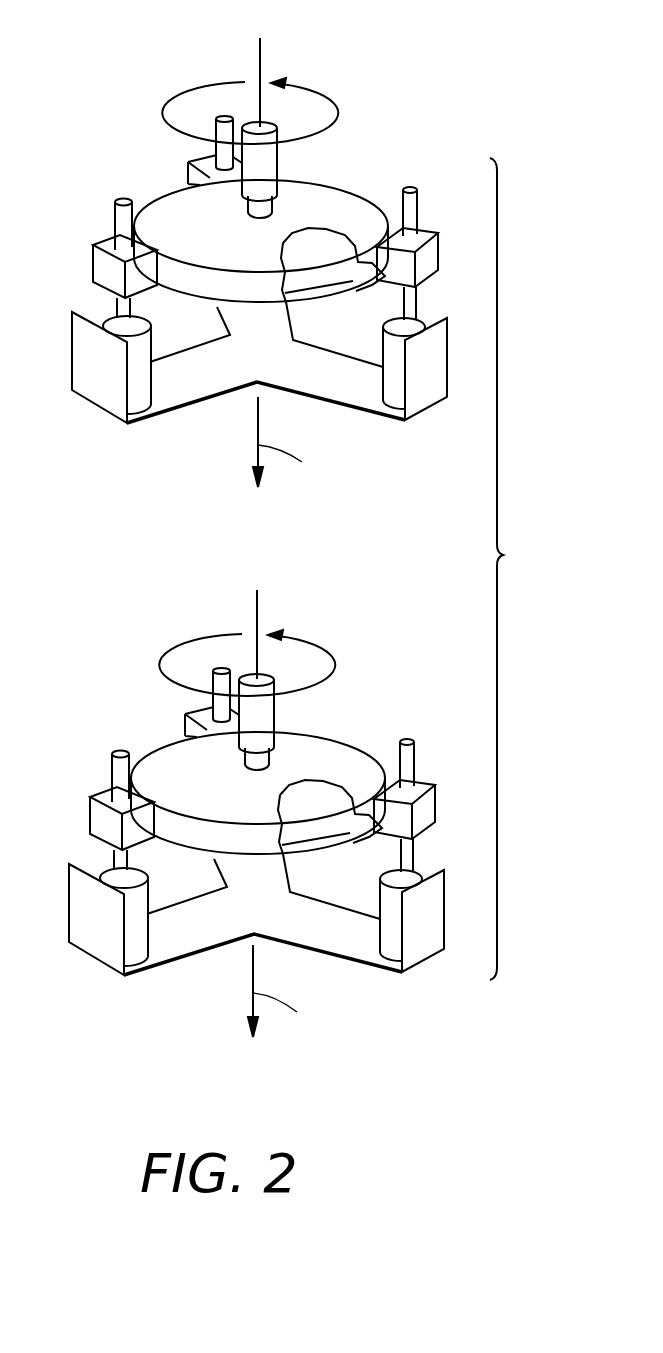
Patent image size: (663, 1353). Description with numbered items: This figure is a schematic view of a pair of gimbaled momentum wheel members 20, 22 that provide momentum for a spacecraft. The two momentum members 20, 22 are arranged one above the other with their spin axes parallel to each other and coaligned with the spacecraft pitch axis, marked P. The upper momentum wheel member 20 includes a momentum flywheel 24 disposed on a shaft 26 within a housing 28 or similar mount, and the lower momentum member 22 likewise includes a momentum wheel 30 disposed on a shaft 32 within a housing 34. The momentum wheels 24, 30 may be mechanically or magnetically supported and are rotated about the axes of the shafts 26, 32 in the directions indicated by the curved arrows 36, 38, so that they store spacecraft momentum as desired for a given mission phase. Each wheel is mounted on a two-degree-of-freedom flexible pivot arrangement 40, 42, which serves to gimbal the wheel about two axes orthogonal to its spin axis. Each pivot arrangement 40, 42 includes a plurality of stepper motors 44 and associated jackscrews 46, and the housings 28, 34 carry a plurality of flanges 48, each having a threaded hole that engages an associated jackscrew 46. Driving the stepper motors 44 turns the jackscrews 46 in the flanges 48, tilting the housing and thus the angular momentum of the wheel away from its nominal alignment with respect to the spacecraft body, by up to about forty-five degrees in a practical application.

The gimbaled momentum wheel member 20 is at (132, 150).
The gimbaled momentum wheel member 22 is at (238, 812).
The momentum flywheel 24 is at (307, 285).
The shaft 26 is at (273, 168).
The housing 28 is at (337, 198).
The momentum wheel 30 is at (330, 834).
The shaft 32 is at (299, 722).
The housing 34 is at (278, 771).
The curved arrow 36 is at (330, 92).
The curved arrow 38 is at (229, 640).
The two-degree-of-freedom flexible pivot arrangement 40 is at (205, 473).
The two-degree-of-freedom flexible pivot arrangement 42 is at (407, 628).
The stepper motor 44 is at (140, 380).
The jackscrew 46 is at (120, 222).
The flange 48 is at (103, 268).